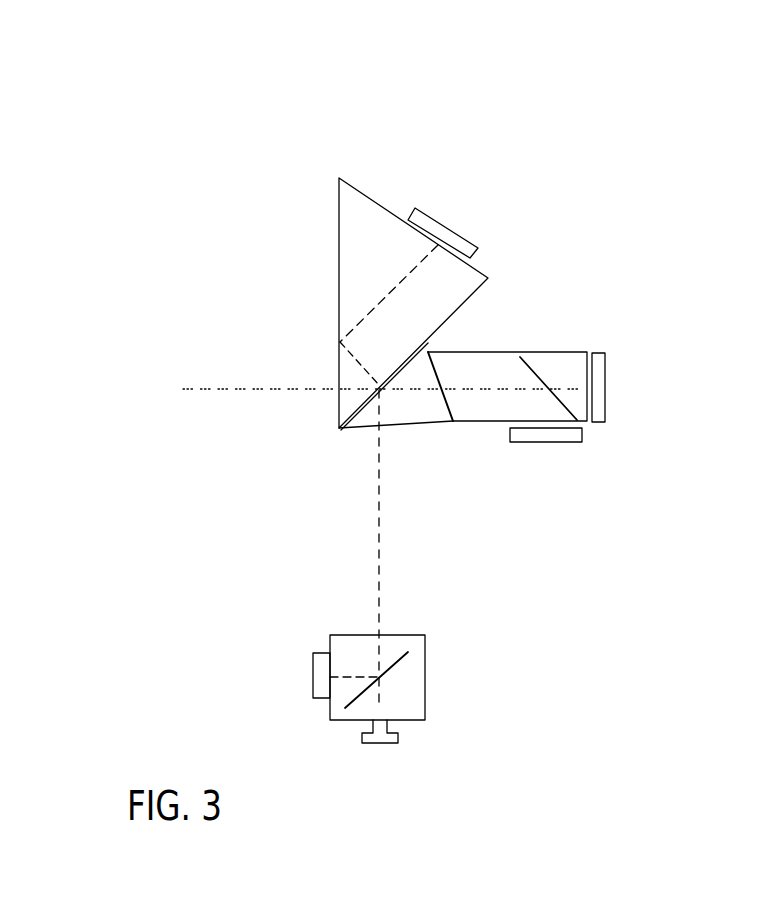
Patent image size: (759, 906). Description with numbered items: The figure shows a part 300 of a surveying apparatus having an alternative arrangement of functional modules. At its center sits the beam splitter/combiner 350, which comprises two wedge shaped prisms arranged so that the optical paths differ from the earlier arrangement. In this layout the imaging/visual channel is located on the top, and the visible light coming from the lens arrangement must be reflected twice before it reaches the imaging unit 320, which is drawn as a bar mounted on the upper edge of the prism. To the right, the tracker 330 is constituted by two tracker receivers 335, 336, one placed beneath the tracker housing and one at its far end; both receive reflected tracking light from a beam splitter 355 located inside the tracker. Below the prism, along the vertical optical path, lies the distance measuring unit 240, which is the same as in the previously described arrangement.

The surveying apparatus part 300 is at (113, 103).
The imaging unit 320 is at (453, 232).
The beam splitter/combiner 350 is at (438, 330).
The tracker 330 is at (484, 316).
The beam splitter 355 is at (537, 372).
The tracker receiver 336 is at (605, 392).
The tracker receiver 335 is at (575, 442).
The distance measuring unit 240 is at (427, 662).